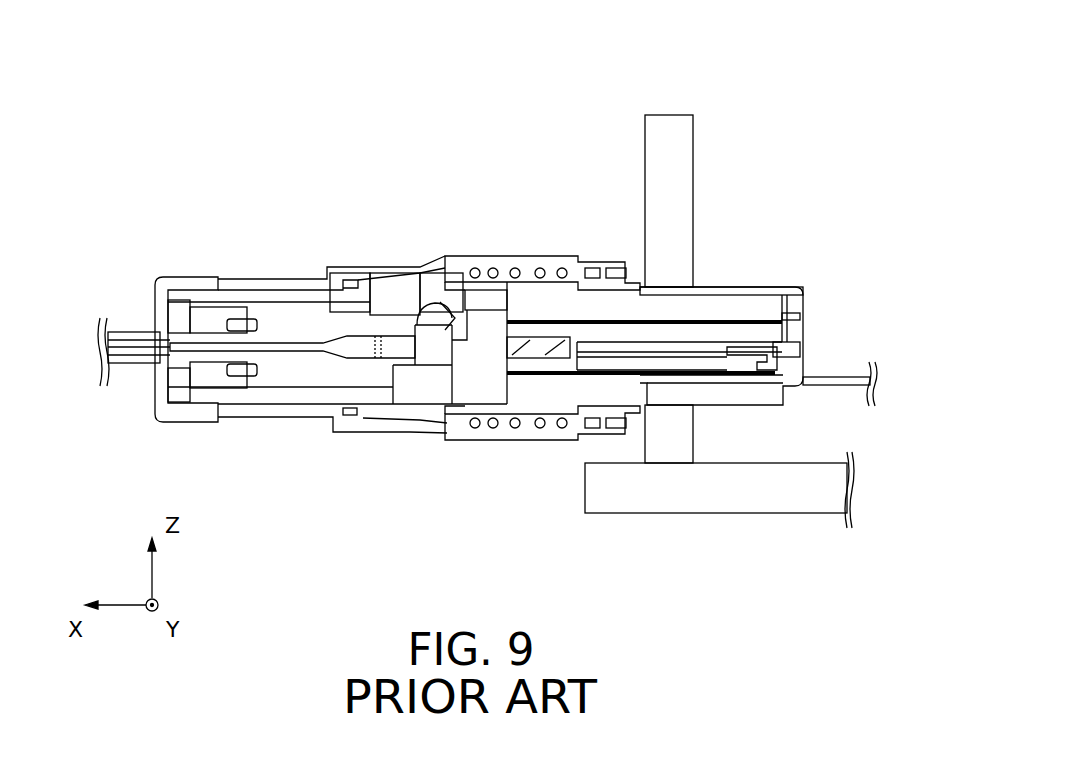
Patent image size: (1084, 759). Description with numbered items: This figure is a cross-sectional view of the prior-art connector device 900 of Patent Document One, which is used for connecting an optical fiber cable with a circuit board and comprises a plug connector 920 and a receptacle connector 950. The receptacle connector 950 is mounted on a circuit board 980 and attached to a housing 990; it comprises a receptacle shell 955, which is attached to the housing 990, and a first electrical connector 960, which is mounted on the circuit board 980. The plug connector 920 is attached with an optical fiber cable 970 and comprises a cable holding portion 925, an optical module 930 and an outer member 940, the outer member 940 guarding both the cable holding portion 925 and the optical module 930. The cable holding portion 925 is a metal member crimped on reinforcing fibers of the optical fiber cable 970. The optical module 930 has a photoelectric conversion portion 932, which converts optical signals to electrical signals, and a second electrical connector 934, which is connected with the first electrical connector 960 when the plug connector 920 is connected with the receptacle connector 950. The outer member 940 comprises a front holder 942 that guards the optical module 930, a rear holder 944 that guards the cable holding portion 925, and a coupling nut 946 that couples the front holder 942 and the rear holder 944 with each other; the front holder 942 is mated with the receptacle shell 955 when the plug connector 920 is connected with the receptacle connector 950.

The connector device 900 is at (633, 64).
The plug connector 920 is at (487, 188).
The cable holding portion 925 is at (214, 305).
The optical module 930 is at (450, 320).
The photoelectric conversion portion 932 is at (543, 320).
The second electrical connector 934 is at (743, 362).
The outer member 940 is at (505, 540).
The front holder 942 is at (495, 410).
The rear holder 944 is at (291, 398).
The coupling nut 946 is at (360, 433).
The receptacle connector 950 is at (815, 315).
The receptacle shell 955 is at (650, 286).
The first electrical connector 960 is at (743, 368).
The optical fiber cable 970 is at (129, 330).
The circuit board 980 is at (840, 386).
The housing 990 is at (680, 157).